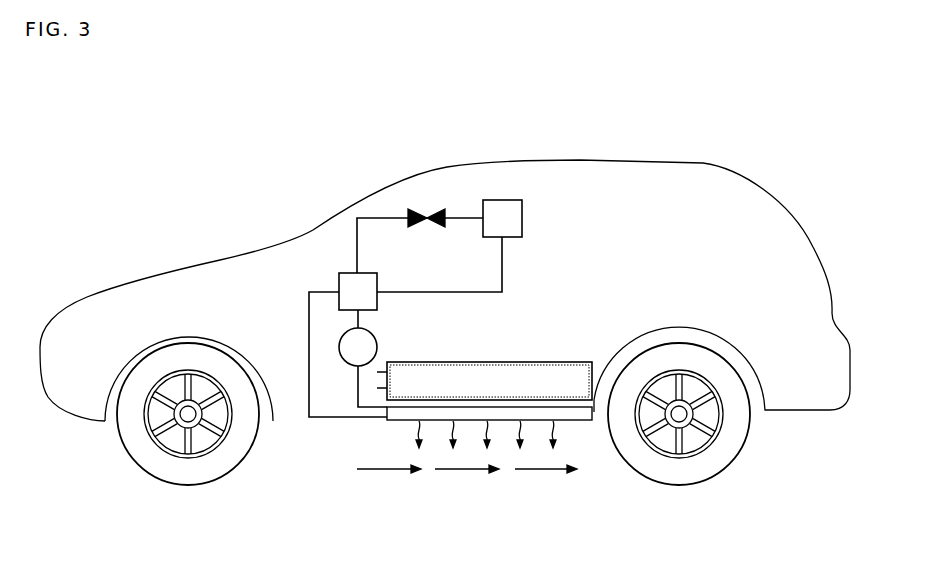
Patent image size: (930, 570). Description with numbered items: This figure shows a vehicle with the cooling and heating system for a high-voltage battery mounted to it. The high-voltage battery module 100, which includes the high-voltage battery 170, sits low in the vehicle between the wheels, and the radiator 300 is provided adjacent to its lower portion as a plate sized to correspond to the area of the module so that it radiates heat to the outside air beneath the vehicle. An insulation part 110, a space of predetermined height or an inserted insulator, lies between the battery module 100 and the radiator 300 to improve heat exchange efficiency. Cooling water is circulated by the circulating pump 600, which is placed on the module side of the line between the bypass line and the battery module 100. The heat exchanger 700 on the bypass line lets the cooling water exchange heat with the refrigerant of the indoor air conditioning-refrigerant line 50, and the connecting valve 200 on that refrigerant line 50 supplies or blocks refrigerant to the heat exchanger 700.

The indoor air conditioning-refrigerant line 50 is at (507, 199).
The high-voltage battery module 100 is at (583, 350).
The insulation part 110 is at (578, 425).
The high-voltage battery 170 is at (525, 383).
The connecting valve 200 is at (418, 207).
The radiator 300 is at (465, 425).
The circulating pump 600 is at (351, 365).
The heat exchanger 700 is at (345, 273).